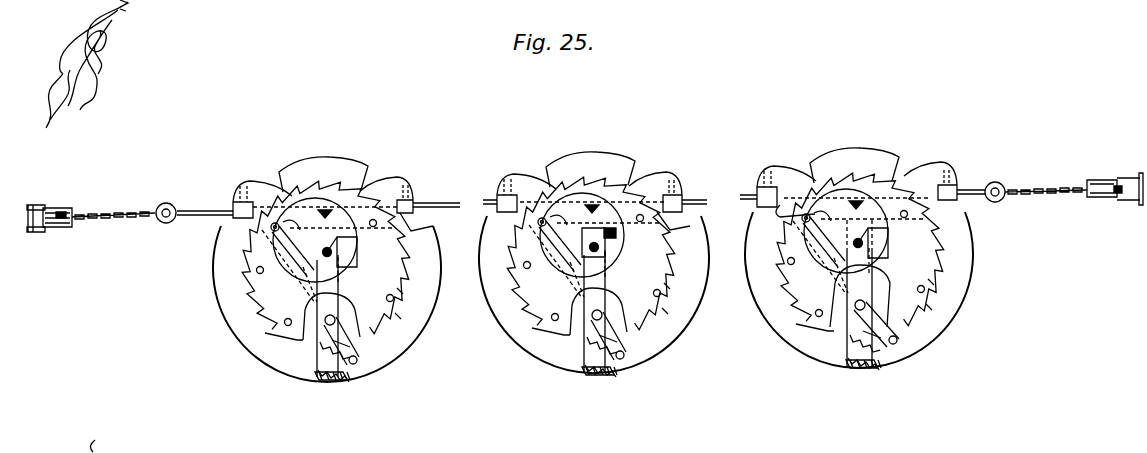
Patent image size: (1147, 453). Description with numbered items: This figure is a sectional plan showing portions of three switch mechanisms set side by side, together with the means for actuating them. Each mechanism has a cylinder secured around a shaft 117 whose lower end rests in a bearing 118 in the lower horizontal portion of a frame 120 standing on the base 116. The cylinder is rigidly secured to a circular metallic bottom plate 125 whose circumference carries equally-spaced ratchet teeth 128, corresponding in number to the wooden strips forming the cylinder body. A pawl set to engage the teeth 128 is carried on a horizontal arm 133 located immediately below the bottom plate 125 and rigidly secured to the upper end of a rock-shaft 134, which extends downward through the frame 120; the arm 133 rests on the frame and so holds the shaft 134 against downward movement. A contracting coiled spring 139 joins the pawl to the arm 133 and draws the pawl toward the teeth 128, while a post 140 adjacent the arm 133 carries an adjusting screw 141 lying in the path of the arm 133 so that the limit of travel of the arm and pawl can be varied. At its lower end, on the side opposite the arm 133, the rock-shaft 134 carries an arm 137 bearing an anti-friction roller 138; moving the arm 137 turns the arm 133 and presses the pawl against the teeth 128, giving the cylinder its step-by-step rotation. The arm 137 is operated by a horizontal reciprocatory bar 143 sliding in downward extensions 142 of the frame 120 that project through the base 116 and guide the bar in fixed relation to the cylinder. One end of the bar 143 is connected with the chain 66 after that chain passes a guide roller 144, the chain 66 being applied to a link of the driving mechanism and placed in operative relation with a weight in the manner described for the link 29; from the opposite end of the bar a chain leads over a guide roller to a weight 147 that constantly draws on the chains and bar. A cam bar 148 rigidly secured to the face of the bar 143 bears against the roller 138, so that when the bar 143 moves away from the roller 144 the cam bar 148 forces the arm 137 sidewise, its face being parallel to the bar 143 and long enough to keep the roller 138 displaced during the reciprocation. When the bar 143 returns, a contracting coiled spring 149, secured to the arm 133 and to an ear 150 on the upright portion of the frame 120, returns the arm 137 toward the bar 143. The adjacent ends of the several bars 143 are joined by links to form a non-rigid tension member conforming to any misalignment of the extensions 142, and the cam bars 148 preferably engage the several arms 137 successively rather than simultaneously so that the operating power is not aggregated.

The base 116 is at (351, 162).
The downward extensions 142 is at (242, 186).
The horizontal reciprocatory bar 143 is at (442, 210).
The chain 66 is at (133, 210).
The weight 147 is at (44, 209).
The guide roller 144 is at (72, 222).
The link 29 is at (1122, 197).
The bearing 118 is at (297, 263).
The shaft 117 is at (332, 255).
The cam bar 148 is at (607, 236).
The anti-friction roller 138 is at (284, 230).
The arm 137 is at (285, 247).
The frame 120 is at (338, 268).
The rock-shaft 134 is at (348, 312).
The contracting coiled spring 139 is at (354, 337).
The contracting coiled spring 149 is at (352, 362).
The post 140 is at (325, 352).
The adjusting screw 141 is at (318, 368).
The ear 150 is at (323, 382).
The horizontal arm 133 is at (324, 340).
The bottom plate 125 is at (400, 292).
The ratchet teeth 128 is at (398, 317).